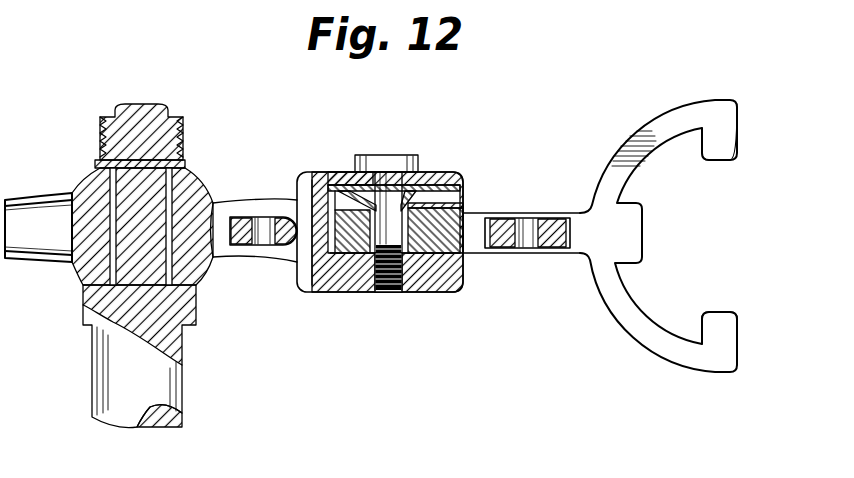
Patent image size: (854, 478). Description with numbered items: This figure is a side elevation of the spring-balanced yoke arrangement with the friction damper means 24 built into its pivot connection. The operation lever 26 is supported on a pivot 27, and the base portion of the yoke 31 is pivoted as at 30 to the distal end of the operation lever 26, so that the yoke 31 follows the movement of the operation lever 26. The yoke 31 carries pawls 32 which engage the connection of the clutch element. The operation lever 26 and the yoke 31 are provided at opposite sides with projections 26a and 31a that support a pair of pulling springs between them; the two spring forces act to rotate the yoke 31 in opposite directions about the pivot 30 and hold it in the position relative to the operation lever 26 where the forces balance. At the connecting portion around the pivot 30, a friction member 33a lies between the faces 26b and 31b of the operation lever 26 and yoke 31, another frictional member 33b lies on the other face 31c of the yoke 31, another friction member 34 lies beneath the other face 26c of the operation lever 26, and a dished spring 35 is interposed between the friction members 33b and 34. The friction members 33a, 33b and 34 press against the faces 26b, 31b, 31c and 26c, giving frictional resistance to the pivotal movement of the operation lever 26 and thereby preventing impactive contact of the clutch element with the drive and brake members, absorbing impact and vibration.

The friction damper means 24 is at (460, 186).
The operation lever 26 is at (32, 255).
The projection 26a is at (243, 243).
The face 26b is at (350, 258).
The other face 26c is at (350, 178).
The pivot 27 is at (150, 229).
The pivot 30 is at (388, 166).
The yoke 31 is at (621, 323).
The projection 31a is at (556, 222).
The face 31b is at (435, 230).
The other face 31c is at (445, 204).
The pawls 32 is at (718, 158).
The friction member 33a is at (426, 258).
The frictional member 33b is at (303, 210).
The friction member 34 is at (336, 172).
The dished spring 35 is at (410, 192).